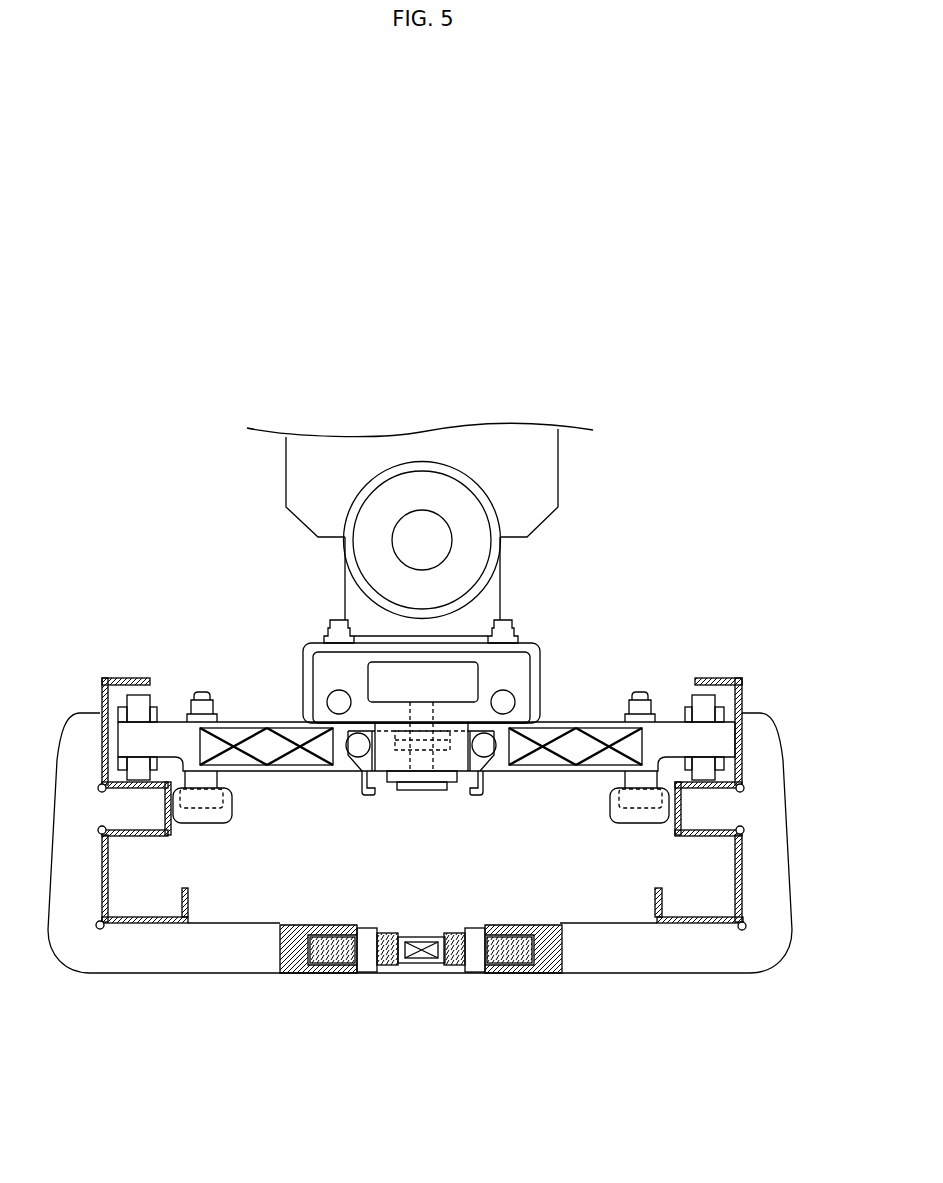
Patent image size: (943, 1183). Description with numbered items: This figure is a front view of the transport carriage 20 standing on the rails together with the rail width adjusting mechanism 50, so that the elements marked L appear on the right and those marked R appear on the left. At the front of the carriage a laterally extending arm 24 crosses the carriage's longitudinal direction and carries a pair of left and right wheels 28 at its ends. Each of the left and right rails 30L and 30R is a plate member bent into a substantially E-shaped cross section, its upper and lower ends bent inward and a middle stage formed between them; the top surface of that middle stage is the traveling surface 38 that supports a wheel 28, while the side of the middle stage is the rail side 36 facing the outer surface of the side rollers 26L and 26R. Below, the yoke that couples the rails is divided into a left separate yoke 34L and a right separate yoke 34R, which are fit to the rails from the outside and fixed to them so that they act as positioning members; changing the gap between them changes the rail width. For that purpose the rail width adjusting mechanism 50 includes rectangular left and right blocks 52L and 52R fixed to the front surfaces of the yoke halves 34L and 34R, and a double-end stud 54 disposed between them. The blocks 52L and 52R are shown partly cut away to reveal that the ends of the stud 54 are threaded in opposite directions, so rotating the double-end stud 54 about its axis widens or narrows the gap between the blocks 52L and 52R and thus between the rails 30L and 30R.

The transport carriage 20 is at (563, 613).
The arm 24 is at (267, 722).
The wheels 28 is at (152, 695).
The traveling surface 38 is at (105, 775).
The rail side 36 is at (170, 833).
The side roller 26R is at (233, 813).
The side roller 26L is at (618, 812).
The right rail 30R is at (190, 905).
The left rail 30L is at (655, 902).
The right separate yoke 34R is at (145, 975).
The left separate yoke 34L is at (722, 977).
The rail width adjusting mechanism 50 is at (420, 1041).
The right block 52R is at (285, 975).
The left block 52L is at (560, 977).
The double-end stud 54 is at (422, 965).